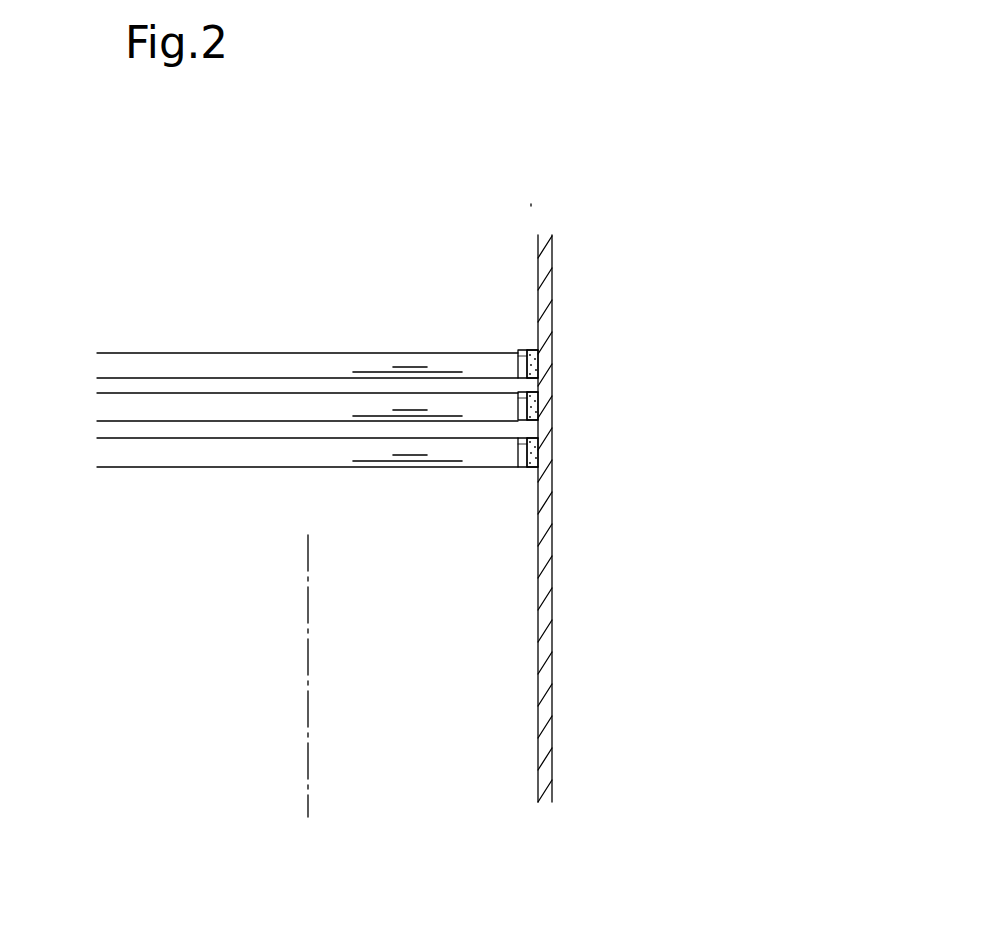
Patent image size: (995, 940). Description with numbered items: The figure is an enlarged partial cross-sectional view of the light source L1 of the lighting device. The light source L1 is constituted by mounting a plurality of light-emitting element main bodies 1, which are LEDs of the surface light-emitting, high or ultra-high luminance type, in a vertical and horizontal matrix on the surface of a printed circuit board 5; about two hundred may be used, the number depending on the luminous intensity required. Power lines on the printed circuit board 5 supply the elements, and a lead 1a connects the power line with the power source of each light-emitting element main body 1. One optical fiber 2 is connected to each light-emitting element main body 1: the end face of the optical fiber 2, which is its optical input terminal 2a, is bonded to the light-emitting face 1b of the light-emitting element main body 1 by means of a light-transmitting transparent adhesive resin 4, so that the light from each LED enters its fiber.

The light source L1 is at (531, 200).
The optical fiber 2 is at (147, 353).
The optical input terminal 2a is at (527, 380).
The light-emitting element main body 1 is at (530, 367).
The lead 1a is at (533, 348).
The light-emitting face 1b is at (522, 380).
The light-transmitting transparent adhesive resin 4 is at (522, 393).
The printed circuit board 5 is at (553, 282).